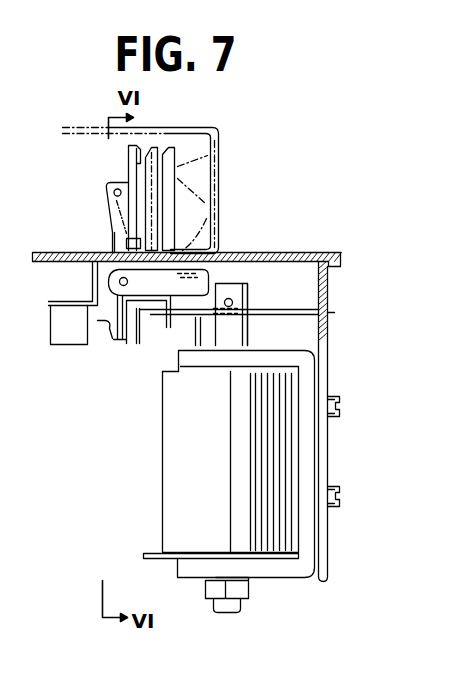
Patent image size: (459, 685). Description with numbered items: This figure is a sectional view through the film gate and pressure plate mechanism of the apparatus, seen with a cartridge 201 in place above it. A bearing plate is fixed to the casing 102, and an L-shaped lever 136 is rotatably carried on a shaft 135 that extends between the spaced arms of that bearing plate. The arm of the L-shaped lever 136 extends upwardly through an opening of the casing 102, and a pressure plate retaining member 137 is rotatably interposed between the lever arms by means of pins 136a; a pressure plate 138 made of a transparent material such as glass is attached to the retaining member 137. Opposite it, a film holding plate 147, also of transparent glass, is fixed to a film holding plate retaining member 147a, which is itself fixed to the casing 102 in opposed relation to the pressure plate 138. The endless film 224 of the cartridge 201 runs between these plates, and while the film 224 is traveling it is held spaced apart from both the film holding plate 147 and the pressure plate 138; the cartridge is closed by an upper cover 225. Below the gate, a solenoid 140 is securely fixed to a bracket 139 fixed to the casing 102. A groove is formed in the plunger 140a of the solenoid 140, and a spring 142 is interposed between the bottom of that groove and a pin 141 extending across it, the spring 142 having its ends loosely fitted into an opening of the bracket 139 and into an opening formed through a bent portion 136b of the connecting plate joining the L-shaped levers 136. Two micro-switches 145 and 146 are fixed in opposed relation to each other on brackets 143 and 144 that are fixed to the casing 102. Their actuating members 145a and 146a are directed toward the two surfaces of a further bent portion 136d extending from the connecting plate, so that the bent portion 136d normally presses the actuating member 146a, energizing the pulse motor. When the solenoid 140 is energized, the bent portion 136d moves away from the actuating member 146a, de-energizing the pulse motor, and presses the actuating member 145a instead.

The casing 102 is at (257, 253).
The shaft 135 is at (126, 245).
The L-shaped lever 136 is at (111, 221).
The pin 136a is at (113, 191).
The bent portion of connecting plate 136b is at (179, 324).
The bent portion 136d is at (97, 320).
The pressure plate retaining member 137 is at (128, 167).
The pressure plate 138 is at (144, 146).
The bracket 139 is at (330, 344).
The solenoid 140 is at (162, 435).
The plunger 140a is at (249, 300).
The pin 141 is at (228, 307).
The spring 142 is at (270, 313).
The bracket 143 is at (70, 301).
The bracket 144 is at (244, 278).
The micro-switch 145 is at (70, 346).
The actuating member 145a is at (140, 352).
The micro-switch 146 is at (163, 352).
The actuating member 146a is at (128, 328).
The film holding plate 147 is at (176, 153).
The film holding plate retaining member 147a is at (241, 191).
The cartridge 201 is at (224, 178).
The film 224 is at (163, 147).
The upper cover 225 is at (88, 121).